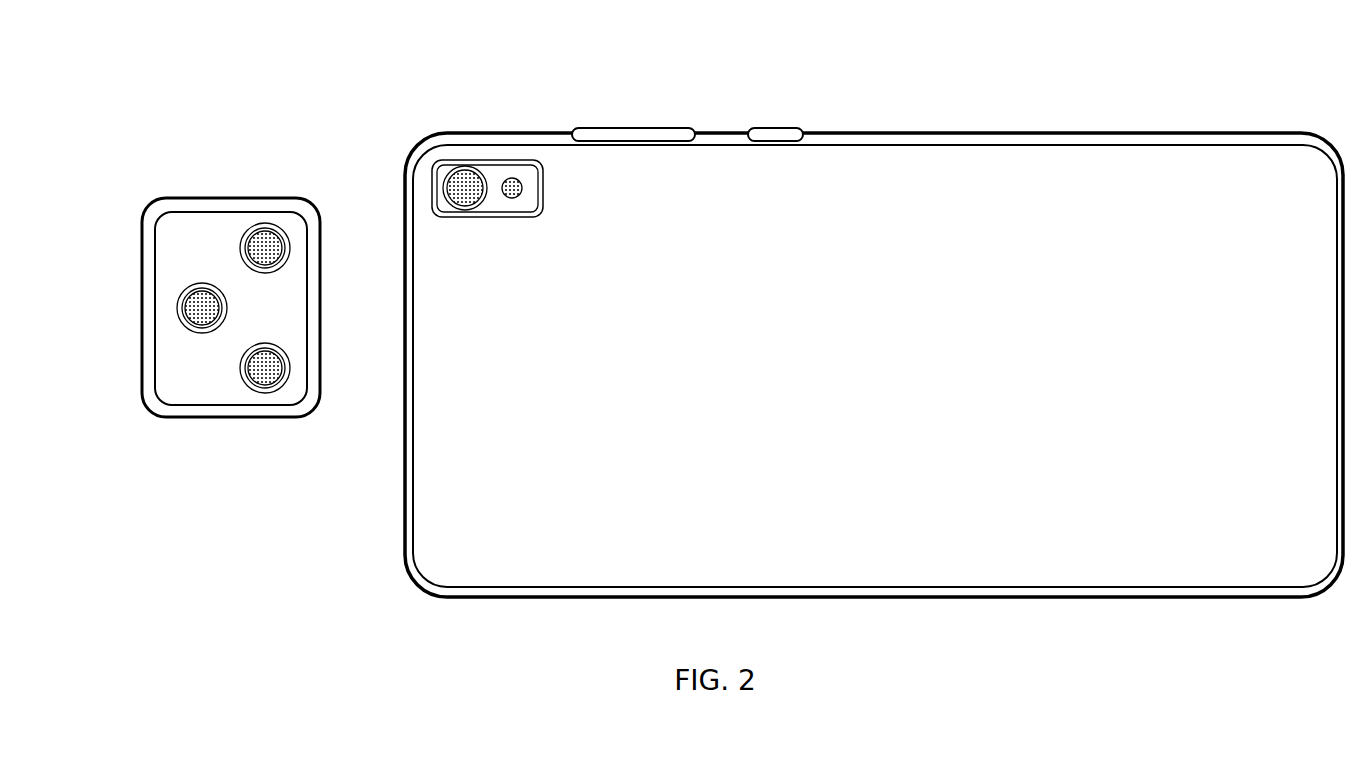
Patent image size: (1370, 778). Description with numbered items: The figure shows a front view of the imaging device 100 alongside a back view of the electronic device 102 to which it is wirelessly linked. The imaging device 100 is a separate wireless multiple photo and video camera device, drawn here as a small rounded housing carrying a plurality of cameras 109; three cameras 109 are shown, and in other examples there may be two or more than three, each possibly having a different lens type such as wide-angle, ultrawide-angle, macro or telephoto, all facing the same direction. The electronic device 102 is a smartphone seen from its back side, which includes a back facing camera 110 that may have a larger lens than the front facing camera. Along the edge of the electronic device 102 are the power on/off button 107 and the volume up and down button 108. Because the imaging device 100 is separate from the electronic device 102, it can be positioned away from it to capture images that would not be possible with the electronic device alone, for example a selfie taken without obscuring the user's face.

The imaging device 100 is at (146, 267).
The electronic device 102 is at (897, 133).
The power on/off button 107 is at (771, 129).
The volume up and down button 108 is at (634, 129).
The cameras 109 is at (224, 225).
The back facing camera 110 is at (454, 157).